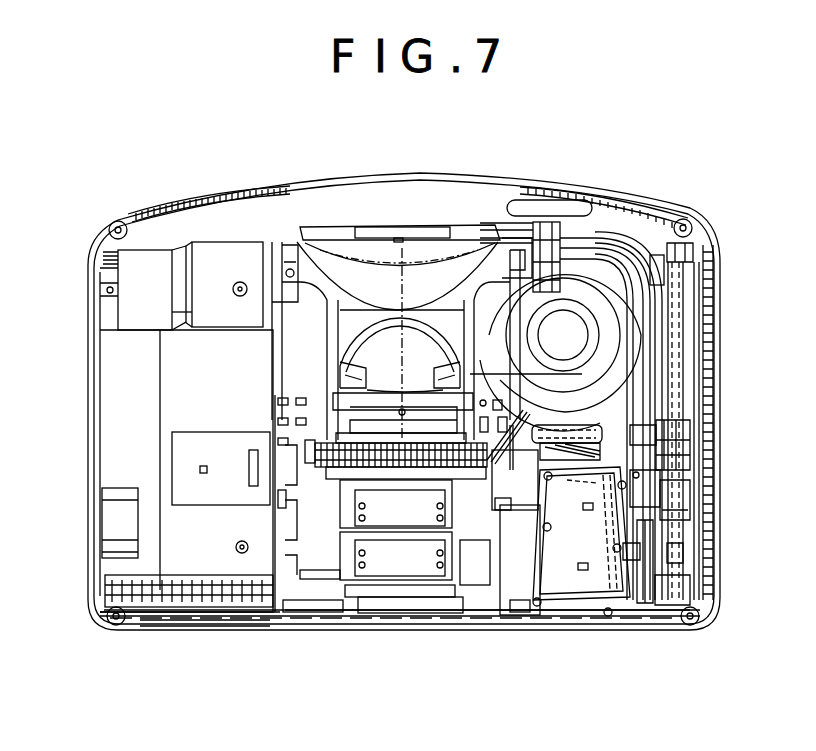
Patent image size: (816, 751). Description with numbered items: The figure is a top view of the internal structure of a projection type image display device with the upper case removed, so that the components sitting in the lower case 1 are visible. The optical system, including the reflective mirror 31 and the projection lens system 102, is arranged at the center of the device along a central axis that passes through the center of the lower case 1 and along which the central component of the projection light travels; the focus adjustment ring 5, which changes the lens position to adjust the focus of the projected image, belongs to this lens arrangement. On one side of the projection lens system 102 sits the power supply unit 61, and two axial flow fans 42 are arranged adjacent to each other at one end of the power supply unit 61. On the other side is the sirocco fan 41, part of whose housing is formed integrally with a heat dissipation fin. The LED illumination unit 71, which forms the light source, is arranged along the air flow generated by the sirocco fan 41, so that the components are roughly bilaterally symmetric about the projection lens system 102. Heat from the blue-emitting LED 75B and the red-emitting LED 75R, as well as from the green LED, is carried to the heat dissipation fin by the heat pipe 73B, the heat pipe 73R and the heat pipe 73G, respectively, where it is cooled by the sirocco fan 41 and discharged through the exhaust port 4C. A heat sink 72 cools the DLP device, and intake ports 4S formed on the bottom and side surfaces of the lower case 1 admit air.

The lower case 1 is at (707, 530).
The exhaust port 4C is at (550, 190).
The intake ports 4S is at (138, 622).
The focus adjustment ring 5 is at (403, 455).
The reflective mirror 31 is at (383, 255).
The sirocco fan 41 is at (598, 327).
The axial flow fans 42 is at (145, 272).
The power supply unit 61 is at (135, 393).
The LED illumination unit 71 is at (596, 622).
The heat sink 72 is at (322, 612).
The heat pipe 73B is at (596, 240).
The heat pipe 73G is at (640, 236).
The heat pipe 73R is at (690, 280).
The LED 75B is at (690, 432).
The LED 75R is at (665, 482).
The projection lens system 102 is at (607, 388).